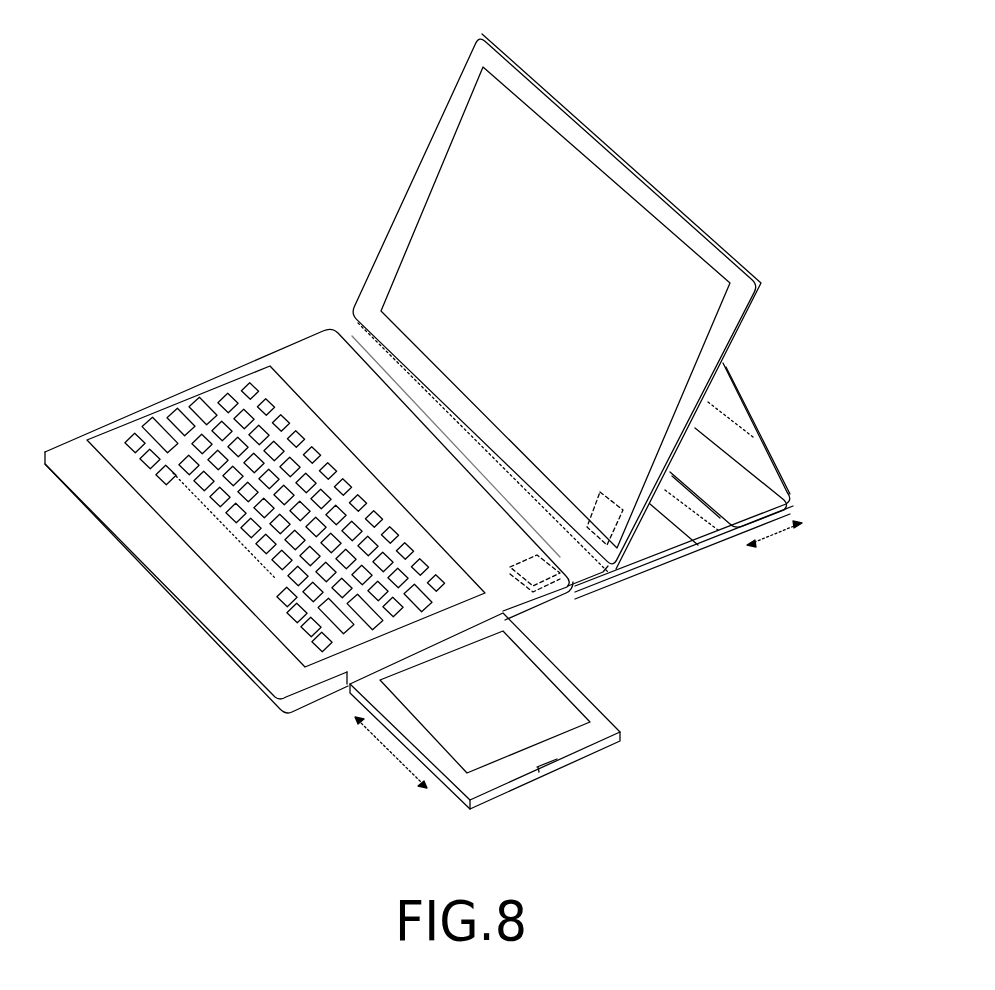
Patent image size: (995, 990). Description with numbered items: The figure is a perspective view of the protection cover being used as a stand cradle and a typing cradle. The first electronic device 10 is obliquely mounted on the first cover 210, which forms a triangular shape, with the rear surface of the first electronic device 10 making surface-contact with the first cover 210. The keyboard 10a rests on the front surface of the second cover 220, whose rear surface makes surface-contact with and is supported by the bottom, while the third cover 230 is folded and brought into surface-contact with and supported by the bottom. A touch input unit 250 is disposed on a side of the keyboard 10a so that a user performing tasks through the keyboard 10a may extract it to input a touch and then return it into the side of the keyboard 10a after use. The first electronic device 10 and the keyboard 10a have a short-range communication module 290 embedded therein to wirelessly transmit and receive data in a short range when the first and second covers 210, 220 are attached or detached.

The first electronic device 10 is at (423, 185).
The keyboard 10a is at (173, 406).
The first cover 210 is at (758, 430).
The second cover 220 is at (320, 702).
The third cover 230 is at (608, 572).
The touch input unit 250 is at (565, 667).
The short-range communication module 290 is at (547, 568).